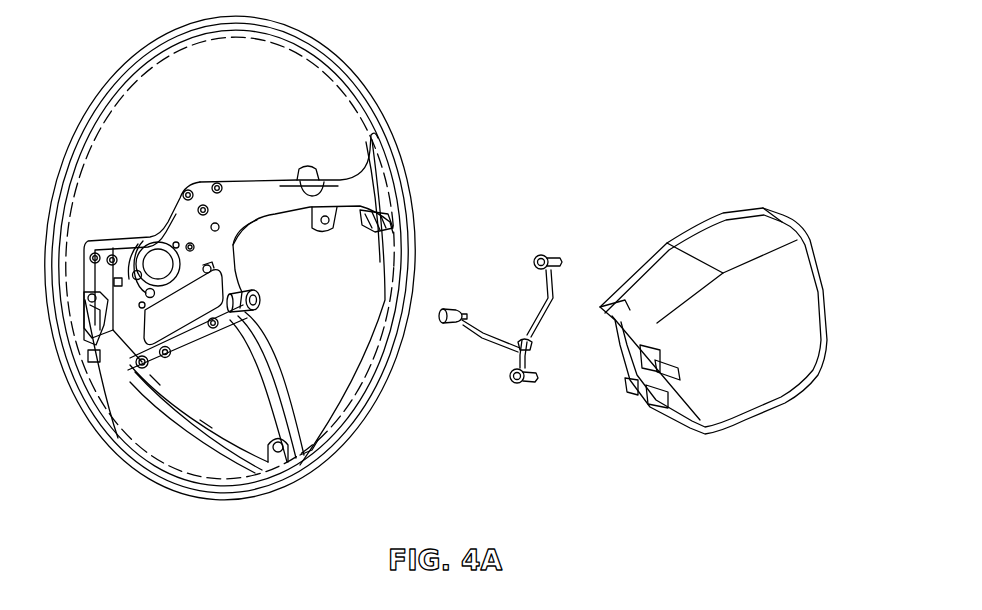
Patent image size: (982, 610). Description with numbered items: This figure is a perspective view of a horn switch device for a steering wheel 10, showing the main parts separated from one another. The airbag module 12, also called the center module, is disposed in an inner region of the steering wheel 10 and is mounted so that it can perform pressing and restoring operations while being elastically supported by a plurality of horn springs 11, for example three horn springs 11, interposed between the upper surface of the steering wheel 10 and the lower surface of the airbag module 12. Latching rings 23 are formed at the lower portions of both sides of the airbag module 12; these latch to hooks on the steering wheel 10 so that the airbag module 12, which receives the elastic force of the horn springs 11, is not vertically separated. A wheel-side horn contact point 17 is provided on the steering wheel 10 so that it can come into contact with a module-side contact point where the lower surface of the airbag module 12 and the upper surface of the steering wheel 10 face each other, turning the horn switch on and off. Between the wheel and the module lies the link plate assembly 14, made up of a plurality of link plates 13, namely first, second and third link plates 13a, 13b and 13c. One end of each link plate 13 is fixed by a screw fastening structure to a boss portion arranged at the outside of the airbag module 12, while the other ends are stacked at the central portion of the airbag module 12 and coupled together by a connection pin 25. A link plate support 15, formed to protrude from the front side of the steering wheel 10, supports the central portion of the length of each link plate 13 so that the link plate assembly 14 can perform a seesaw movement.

The steering wheel 10 is at (356, 84).
The horn spring 11 is at (541, 254).
The airbag module 12 is at (703, 225).
The link plate 13 is at (511, 315).
The first link plate 13a is at (488, 360).
The second link plate 13b is at (519, 391).
The third link plate 13c is at (540, 345).
The link plate assembly 14 is at (509, 285).
The link plate support 15 is at (124, 366).
The wheel-side horn contact point 17 is at (230, 252).
The latching ring 23 is at (630, 378).
The connection pin 25 is at (527, 330).